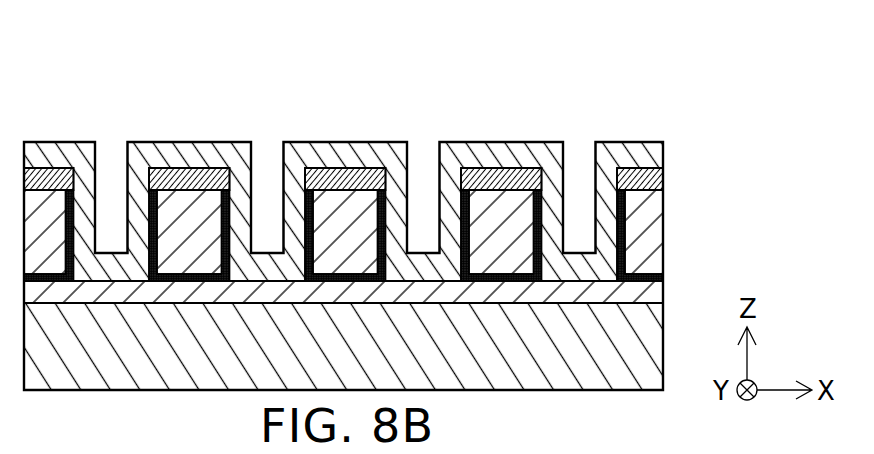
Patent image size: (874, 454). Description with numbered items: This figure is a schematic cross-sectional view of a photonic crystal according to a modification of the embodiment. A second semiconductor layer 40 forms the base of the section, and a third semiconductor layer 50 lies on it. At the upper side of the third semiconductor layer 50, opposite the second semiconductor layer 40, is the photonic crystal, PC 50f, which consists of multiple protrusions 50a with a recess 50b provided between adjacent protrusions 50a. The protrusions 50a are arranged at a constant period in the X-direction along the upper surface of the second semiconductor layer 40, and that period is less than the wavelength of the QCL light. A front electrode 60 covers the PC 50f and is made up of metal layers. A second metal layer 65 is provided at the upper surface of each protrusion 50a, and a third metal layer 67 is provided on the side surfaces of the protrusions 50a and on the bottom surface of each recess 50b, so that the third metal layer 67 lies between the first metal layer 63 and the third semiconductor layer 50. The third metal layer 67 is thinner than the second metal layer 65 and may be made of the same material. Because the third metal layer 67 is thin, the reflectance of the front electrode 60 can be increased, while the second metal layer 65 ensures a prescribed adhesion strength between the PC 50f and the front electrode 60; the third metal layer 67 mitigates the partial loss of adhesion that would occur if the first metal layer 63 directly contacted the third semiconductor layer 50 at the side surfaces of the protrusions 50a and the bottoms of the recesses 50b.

The second semiconductor layer 40 is at (652, 343).
The third semiconductor layer 50 is at (652, 237).
The PC (photonic crystal) 50f is at (349, 147).
The protrusion 50a is at (190, 200).
The recess 50b is at (267, 167).
The front electrode 60 is at (349, 204).
The first metal layer 63 is at (489, 141).
The second metal layer 65 is at (513, 168).
The third metal layer 67 is at (417, 274).